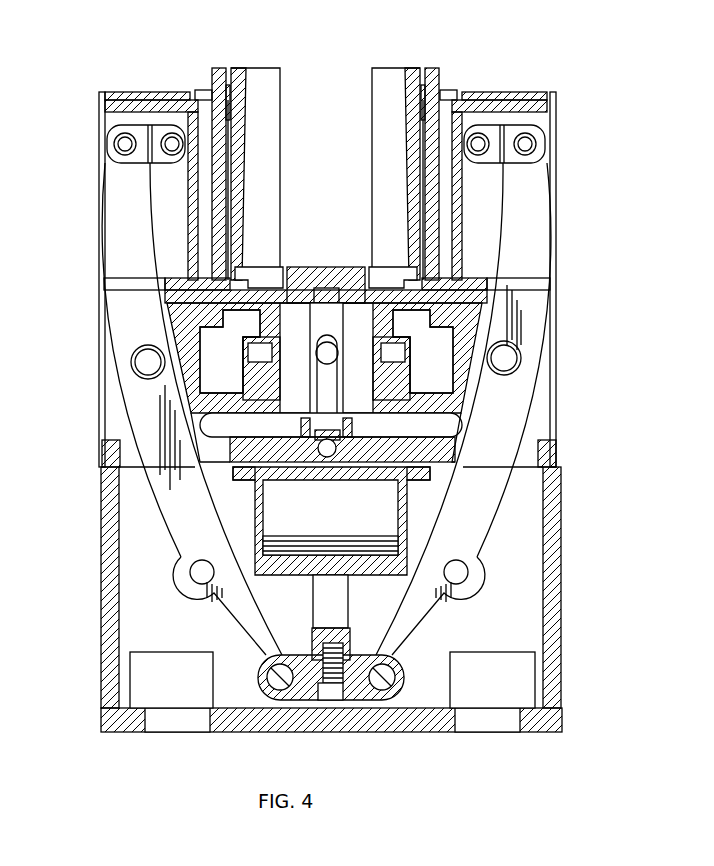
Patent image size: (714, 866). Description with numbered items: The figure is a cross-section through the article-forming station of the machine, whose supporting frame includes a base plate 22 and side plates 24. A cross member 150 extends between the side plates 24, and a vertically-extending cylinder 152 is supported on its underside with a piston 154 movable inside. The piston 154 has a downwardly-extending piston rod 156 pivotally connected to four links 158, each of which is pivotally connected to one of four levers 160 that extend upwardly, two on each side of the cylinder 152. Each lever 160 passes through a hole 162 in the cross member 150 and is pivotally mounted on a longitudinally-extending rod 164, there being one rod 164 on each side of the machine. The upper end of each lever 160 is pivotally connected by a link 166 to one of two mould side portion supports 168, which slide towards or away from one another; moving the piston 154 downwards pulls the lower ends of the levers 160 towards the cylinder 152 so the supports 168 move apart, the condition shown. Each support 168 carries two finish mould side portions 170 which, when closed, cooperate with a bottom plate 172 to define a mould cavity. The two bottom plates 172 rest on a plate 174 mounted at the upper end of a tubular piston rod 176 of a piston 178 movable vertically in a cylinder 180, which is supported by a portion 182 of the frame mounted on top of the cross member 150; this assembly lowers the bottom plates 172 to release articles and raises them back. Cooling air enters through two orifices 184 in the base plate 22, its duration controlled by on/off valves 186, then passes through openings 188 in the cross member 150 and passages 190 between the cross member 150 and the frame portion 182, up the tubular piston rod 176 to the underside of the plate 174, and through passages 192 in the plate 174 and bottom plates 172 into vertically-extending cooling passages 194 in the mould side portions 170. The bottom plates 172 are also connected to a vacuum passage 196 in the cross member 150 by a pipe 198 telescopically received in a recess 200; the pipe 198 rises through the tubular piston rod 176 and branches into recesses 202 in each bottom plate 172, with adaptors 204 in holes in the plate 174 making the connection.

The base plate 22 is at (408, 722).
The side plates 24 is at (100, 588).
The cross member 150 is at (298, 462).
The cylinder 152 is at (400, 490).
The piston 154 is at (280, 533).
The piston rod 156 is at (340, 606).
The links 158 is at (222, 615).
The levers 160 is at (125, 236).
The hole 162 is at (537, 453).
The rod 164 is at (147, 362).
The link 166 is at (160, 133).
The mould side portion supports 168 is at (190, 91).
The finish mould side portions 170 is at (388, 70).
The bottom plate 172 is at (328, 267).
The plate 174 is at (265, 307).
The tubular piston rod 176 is at (410, 375).
The piston 178 is at (263, 380).
The cylinder 180 is at (435, 378).
The portion of the frame 182 is at (372, 407).
The orifices 184 is at (148, 720).
The on/off valves 186 is at (178, 694).
The openings 188 is at (215, 495).
The passages 190 is at (250, 422).
The passages 192 is at (280, 268).
The cooling passages 194 is at (417, 105).
The vacuum passage 196 is at (332, 462).
The pipe 198 is at (337, 388).
The recess 200 is at (352, 420).
The recesses 202 is at (320, 287).
The adaptors 204 is at (376, 300).